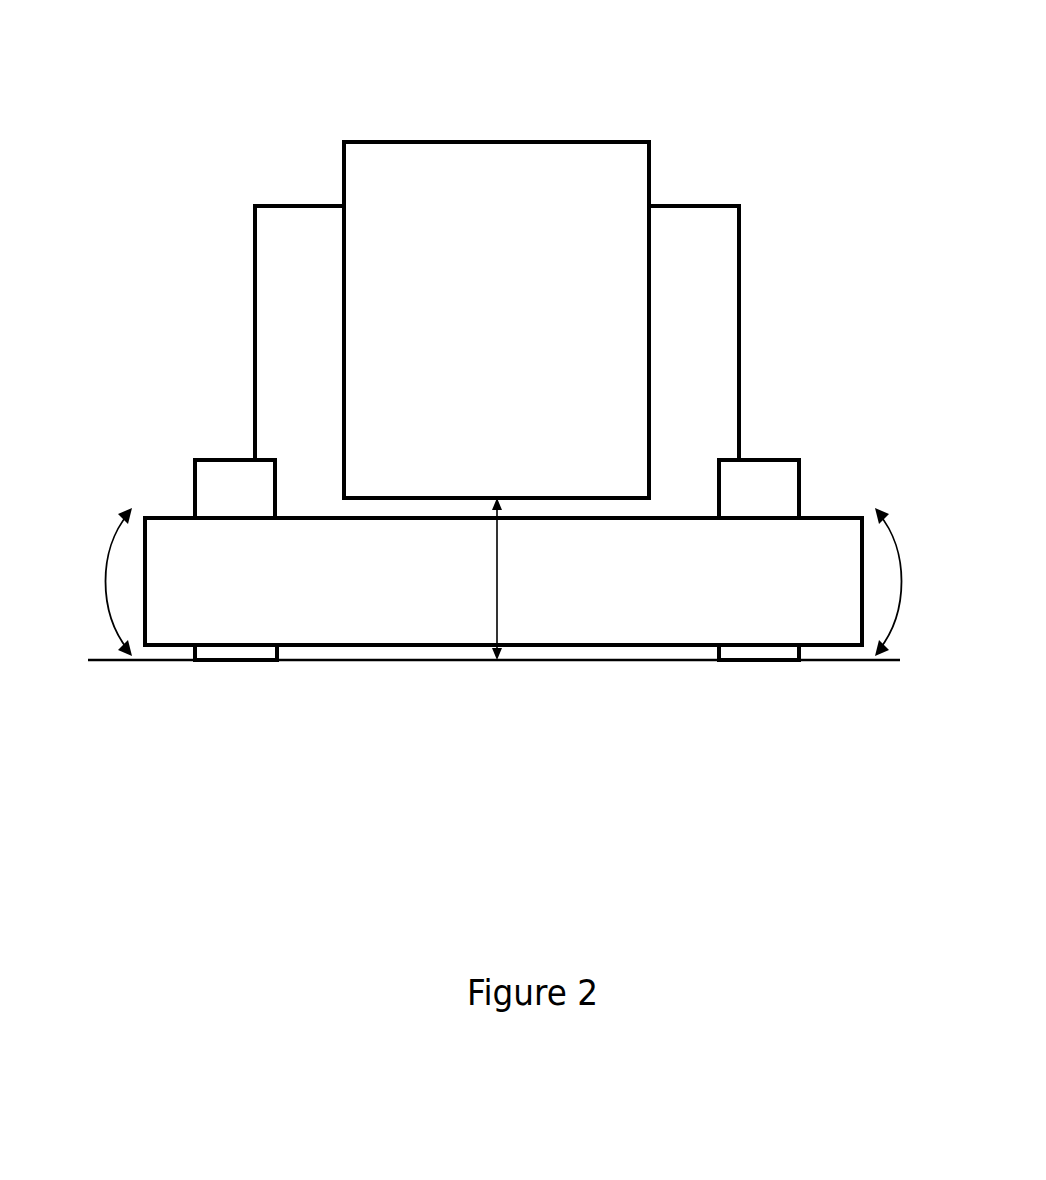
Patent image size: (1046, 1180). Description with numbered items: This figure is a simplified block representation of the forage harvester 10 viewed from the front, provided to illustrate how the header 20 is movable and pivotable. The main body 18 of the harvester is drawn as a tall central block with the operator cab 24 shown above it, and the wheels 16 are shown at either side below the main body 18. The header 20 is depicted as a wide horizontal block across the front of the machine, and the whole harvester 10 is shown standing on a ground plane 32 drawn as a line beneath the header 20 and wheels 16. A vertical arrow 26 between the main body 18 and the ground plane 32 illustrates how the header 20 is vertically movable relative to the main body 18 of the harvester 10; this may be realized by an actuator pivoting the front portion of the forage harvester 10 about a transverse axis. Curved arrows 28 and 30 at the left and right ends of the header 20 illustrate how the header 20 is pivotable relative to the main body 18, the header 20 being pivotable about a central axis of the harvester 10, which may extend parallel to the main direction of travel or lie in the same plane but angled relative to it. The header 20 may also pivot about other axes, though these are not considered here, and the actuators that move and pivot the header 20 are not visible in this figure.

The forage harvester 10 is at (266, 101).
The wheels 16 is at (223, 458).
The main body 18 is at (722, 205).
The header 20 is at (607, 648).
The operator cab 24 is at (609, 141).
The arrow 26 is at (498, 576).
The arrow 28 is at (106, 570).
The arrow 30 is at (901, 604).
The ground plane 32 is at (404, 662).